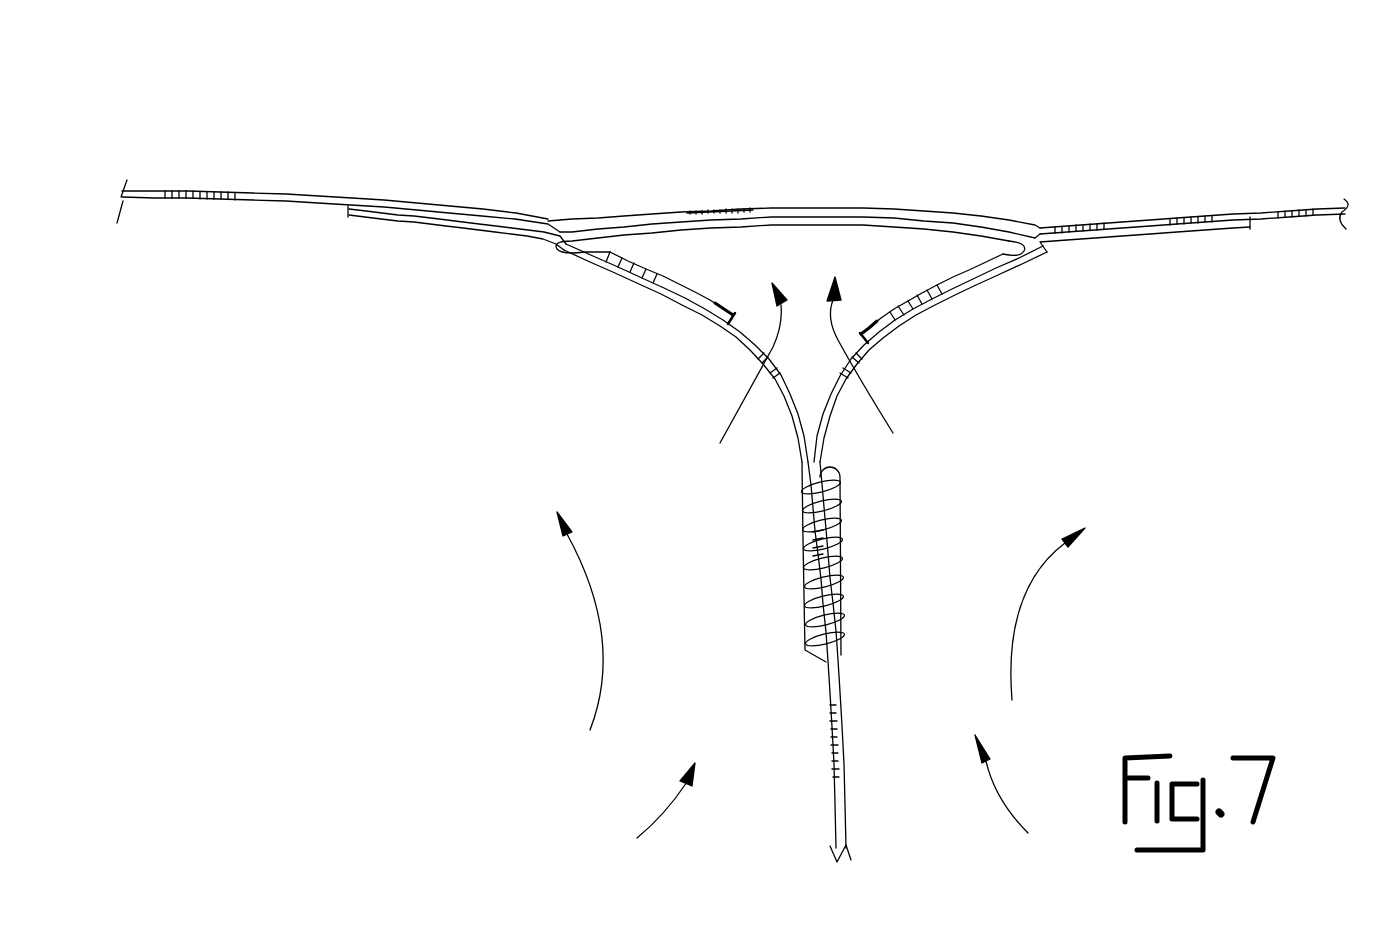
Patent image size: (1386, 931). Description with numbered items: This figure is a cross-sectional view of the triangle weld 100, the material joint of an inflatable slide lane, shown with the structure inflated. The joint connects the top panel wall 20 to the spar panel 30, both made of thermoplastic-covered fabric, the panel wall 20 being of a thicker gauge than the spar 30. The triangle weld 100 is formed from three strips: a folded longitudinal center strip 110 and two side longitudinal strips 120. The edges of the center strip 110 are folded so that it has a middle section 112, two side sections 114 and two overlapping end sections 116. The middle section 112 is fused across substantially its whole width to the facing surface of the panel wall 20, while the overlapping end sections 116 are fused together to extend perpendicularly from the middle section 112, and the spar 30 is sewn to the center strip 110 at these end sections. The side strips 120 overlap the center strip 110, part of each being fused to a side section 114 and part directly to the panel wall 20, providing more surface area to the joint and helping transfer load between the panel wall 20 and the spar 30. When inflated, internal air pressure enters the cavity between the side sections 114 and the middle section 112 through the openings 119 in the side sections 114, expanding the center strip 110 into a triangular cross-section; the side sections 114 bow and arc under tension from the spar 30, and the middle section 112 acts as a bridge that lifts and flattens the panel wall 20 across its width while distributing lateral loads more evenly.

The triangle weld 100 is at (1024, 108).
The top panel wall 20 is at (244, 170).
The center strip 110 is at (639, 186).
The middle section 112 is at (823, 222).
The side sections 114 is at (735, 336).
The end sections 116 is at (798, 548).
The openings 119 is at (775, 374).
The side strips 120 is at (397, 242).
The spar panel 30 is at (862, 721).